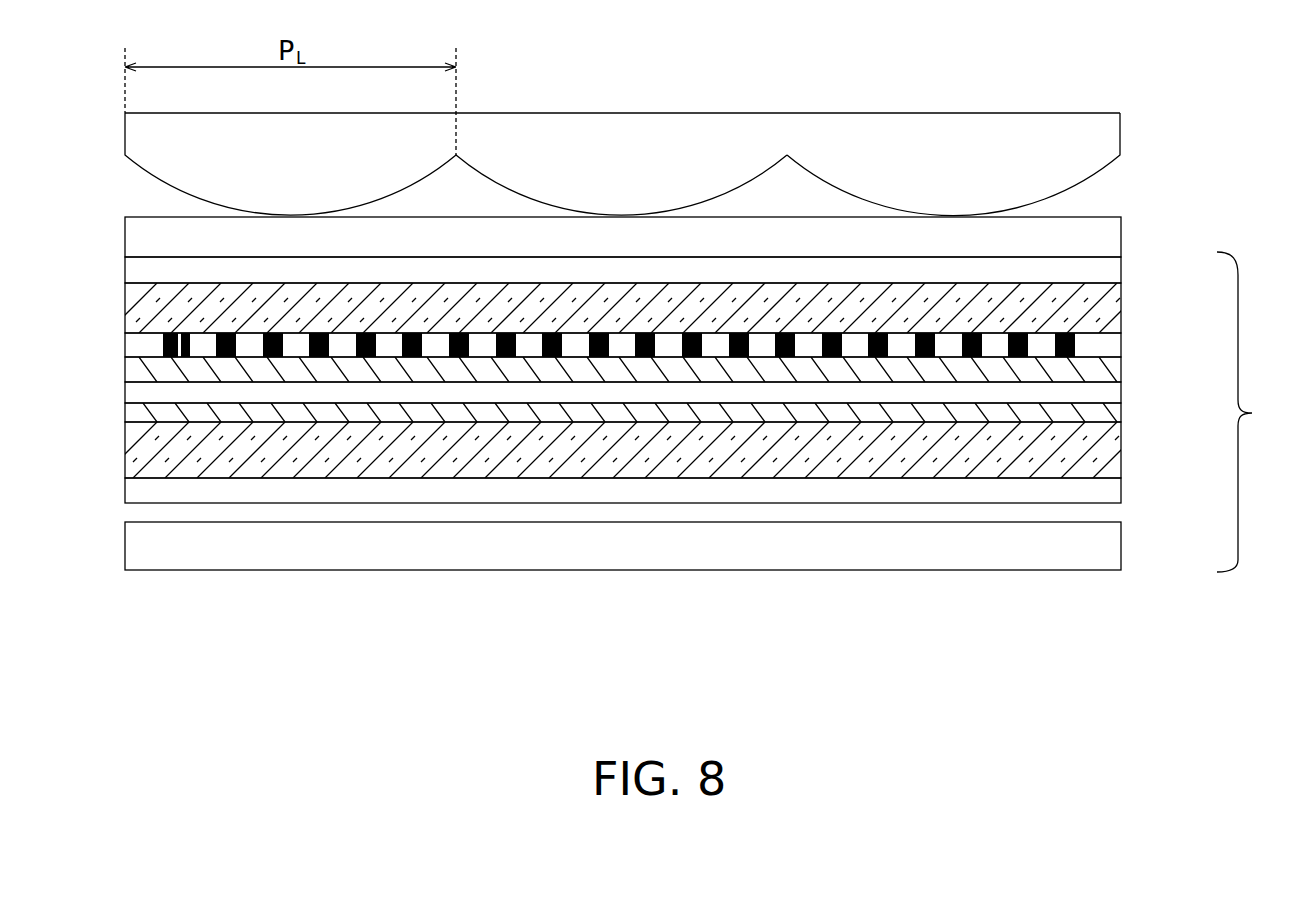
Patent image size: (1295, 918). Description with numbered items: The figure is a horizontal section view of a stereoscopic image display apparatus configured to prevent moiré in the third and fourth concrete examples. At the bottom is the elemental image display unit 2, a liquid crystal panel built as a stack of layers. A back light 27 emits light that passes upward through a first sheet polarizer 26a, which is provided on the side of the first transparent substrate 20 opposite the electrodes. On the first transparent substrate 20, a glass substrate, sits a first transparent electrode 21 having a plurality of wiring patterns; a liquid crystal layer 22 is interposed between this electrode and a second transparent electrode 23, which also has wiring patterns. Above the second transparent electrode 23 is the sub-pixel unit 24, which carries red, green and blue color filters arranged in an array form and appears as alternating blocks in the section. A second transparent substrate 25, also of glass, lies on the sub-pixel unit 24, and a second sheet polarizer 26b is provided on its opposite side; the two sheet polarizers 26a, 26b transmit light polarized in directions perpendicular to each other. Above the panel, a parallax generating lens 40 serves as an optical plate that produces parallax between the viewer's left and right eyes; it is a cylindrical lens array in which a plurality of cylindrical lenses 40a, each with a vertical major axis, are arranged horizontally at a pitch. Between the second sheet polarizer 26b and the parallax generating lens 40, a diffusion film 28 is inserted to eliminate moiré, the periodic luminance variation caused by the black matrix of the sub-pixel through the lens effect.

The elemental image display unit 2 is at (688, 412).
The first transparent substrate 20 is at (1095, 452).
The first transparent electrode 21 is at (1107, 413).
The liquid crystal layer 22 is at (1104, 398).
The second transparent electrode 23 is at (1107, 368).
The sub-pixel unit 24 is at (1104, 344).
The second transparent substrate 25 is at (1097, 306).
The first sheet polarizer 26a is at (1104, 496).
The second sheet polarizer 26b is at (1105, 271).
The back light 27 is at (1104, 548).
The diffusion film 28 is at (1105, 238).
The parallax generating lens 40 is at (672, 131).
The cylindrical lens 40a is at (968, 147).